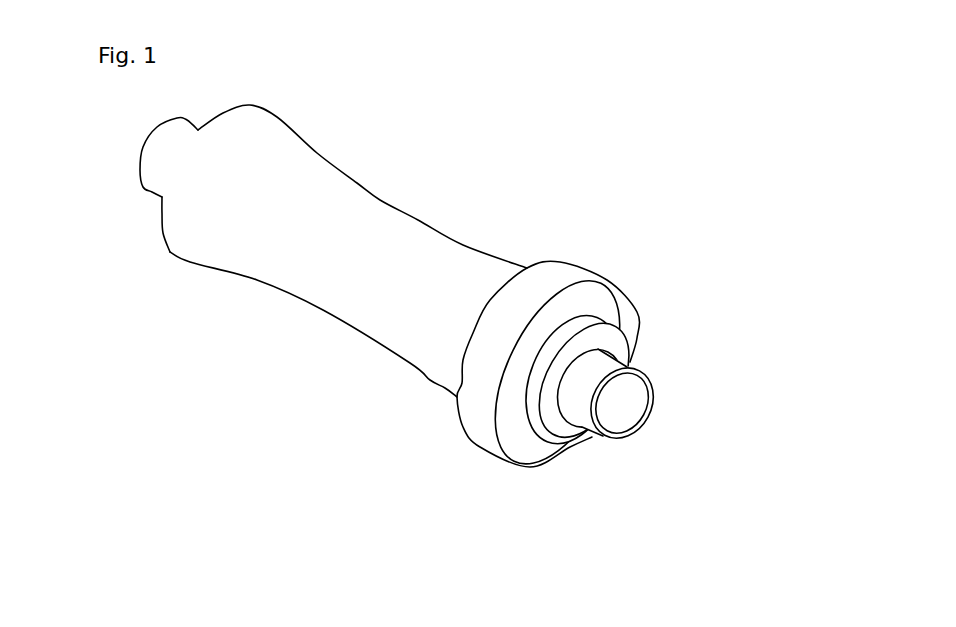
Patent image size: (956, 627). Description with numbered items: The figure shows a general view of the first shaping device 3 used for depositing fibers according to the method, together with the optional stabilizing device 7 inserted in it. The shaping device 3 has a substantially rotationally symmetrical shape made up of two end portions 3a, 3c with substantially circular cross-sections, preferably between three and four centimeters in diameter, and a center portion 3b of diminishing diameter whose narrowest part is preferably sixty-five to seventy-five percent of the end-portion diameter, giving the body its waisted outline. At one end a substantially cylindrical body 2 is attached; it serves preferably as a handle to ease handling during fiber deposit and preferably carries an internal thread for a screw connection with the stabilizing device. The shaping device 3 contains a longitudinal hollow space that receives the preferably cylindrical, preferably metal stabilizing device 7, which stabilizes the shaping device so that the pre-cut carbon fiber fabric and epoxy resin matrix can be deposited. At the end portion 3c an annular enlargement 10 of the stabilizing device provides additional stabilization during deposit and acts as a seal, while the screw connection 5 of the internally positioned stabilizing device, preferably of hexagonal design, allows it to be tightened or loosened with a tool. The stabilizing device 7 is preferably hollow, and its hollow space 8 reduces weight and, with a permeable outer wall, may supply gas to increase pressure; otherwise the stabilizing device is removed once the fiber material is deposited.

The cylindrical body 2 is at (158, 163).
The first shaping device 3 is at (418, 220).
The end portion 3a is at (170, 253).
The center portion 3b is at (322, 308).
The end portion 3c is at (445, 388).
The screw connection 5 is at (590, 320).
The stabilizing device 7 is at (605, 362).
The hollow space 8 is at (618, 410).
The annular enlargement 10 is at (477, 425).